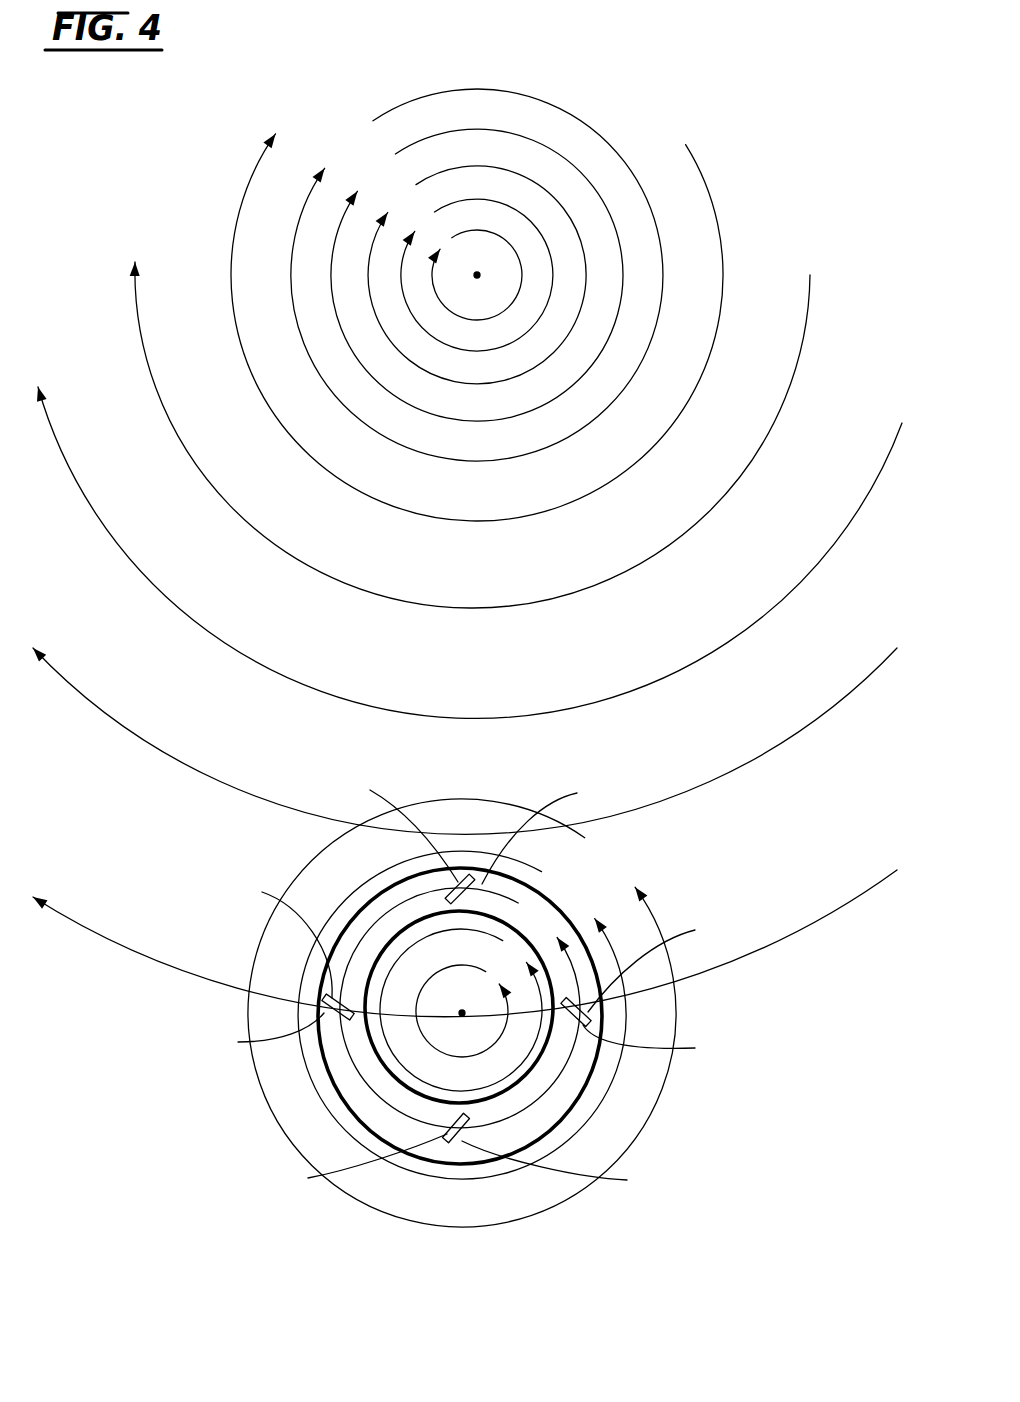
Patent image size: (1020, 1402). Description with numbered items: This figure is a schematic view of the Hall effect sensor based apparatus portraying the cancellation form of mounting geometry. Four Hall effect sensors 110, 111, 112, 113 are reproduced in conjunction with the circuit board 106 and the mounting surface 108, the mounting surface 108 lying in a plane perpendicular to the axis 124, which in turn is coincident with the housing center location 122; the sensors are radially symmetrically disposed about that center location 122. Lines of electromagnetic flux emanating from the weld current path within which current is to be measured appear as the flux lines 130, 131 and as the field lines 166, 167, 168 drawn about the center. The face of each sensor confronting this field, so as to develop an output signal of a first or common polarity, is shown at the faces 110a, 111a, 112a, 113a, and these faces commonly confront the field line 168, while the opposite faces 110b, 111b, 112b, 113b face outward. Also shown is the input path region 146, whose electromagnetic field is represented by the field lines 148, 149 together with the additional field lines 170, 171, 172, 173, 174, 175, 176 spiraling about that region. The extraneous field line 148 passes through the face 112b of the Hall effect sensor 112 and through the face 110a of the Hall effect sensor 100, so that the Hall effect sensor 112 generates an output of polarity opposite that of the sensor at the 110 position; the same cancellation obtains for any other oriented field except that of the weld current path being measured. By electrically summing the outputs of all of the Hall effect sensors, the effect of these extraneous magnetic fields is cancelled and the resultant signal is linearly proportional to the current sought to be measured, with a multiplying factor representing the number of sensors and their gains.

The Hall effect sensor 100 is at (338, 882).
The circuit board 106 is at (558, 905).
The mounting surface 108 is at (543, 874).
The Hall effect sensor 110 is at (327, 997).
The face of Hall effect sensor 110a is at (269, 938).
The face of Hall effect sensor 110b is at (252, 1035).
The Hall effect sensor 111 is at (464, 877).
The face of Hall effect sensor 111a is at (556, 832).
The face of Hall effect sensor 111b is at (385, 827).
The Hall effect sensor 112 is at (592, 1017).
The face of Hall effect sensor 112a is at (666, 1044).
The face of Hall effect sensor 112b is at (669, 964).
The Hall effect sensor 113 is at (455, 1143).
The face of Hall effect sensor 113a is at (347, 1164).
The face of Hall effect sensor 113b is at (573, 1167).
The housing center location 122 is at (308, 1063).
The axis 124 is at (462, 1013).
The line of electromagnetic flux 130 is at (590, 1107).
The line of electromagnetic flux 131 is at (660, 1090).
The input path region 146 is at (477, 275).
The field line 148 is at (810, 935).
The field line 149 is at (748, 762).
The field line 166 is at (438, 1030).
The field line 167 is at (435, 1084).
The field line 168 is at (377, 1097).
The field line 170 is at (648, 681).
The field line 171 is at (600, 582).
The field line 172 is at (570, 505).
The field line 173 is at (550, 450).
The field line 174 is at (530, 416).
The field line 175 is at (522, 381).
The field line 176 is at (513, 303).